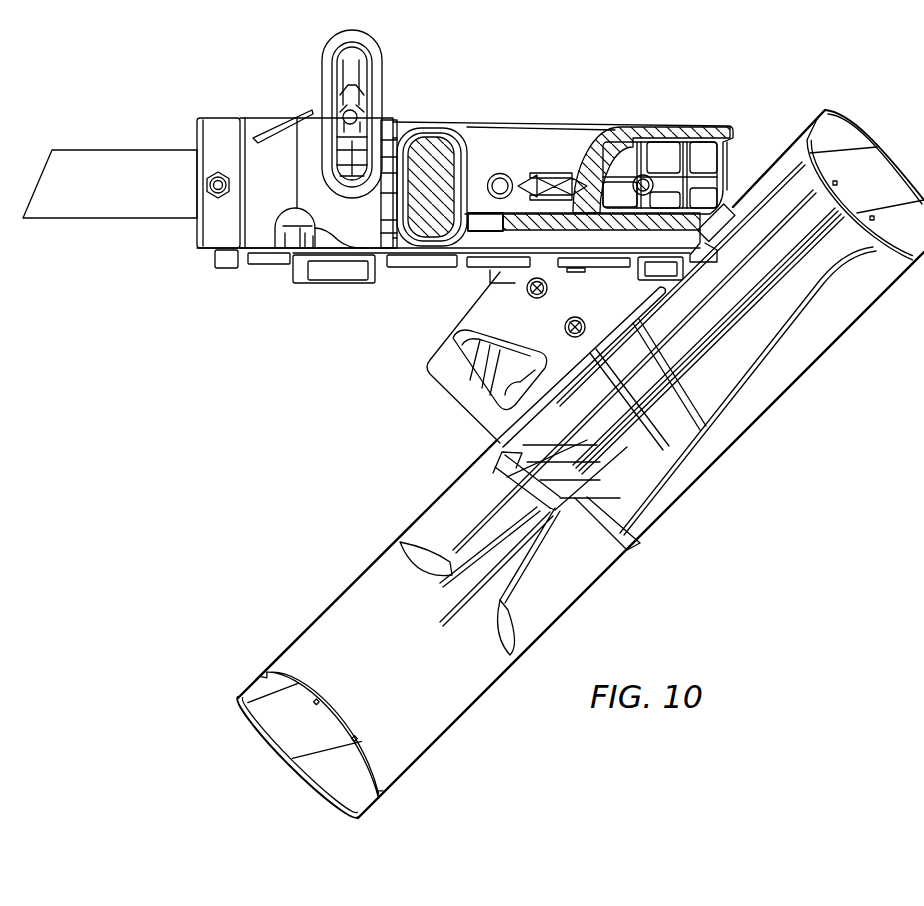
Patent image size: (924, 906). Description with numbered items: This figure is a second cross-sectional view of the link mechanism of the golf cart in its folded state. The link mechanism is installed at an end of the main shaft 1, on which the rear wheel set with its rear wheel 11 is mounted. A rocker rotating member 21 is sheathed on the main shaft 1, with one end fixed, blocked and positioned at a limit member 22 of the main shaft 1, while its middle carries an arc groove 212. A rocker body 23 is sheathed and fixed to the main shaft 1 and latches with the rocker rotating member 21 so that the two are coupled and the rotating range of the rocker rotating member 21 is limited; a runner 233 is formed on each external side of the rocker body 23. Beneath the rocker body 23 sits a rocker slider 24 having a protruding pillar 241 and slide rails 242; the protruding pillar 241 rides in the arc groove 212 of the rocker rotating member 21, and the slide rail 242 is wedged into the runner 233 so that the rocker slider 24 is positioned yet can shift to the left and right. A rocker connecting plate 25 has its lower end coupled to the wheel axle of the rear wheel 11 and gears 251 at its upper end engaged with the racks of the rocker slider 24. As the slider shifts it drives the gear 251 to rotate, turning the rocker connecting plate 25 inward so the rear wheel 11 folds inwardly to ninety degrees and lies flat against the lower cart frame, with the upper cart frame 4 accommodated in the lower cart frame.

The main shaft 1 is at (98, 183).
The rear wheel 11 is at (345, 635).
The rocker rotating member 21 is at (272, 163).
The limit member 22 is at (223, 147).
The rocker body 23 is at (543, 147).
The runner 233 is at (483, 222).
The rocker slider 24 is at (430, 256).
The protruding pillar 241 is at (313, 240).
The slide rail 242 is at (622, 222).
The rocker connecting plate 25 is at (458, 384).
The gear 251 is at (650, 145).
The arc groove 212 is at (292, 222).
The upper cart frame 4 is at (352, 33).